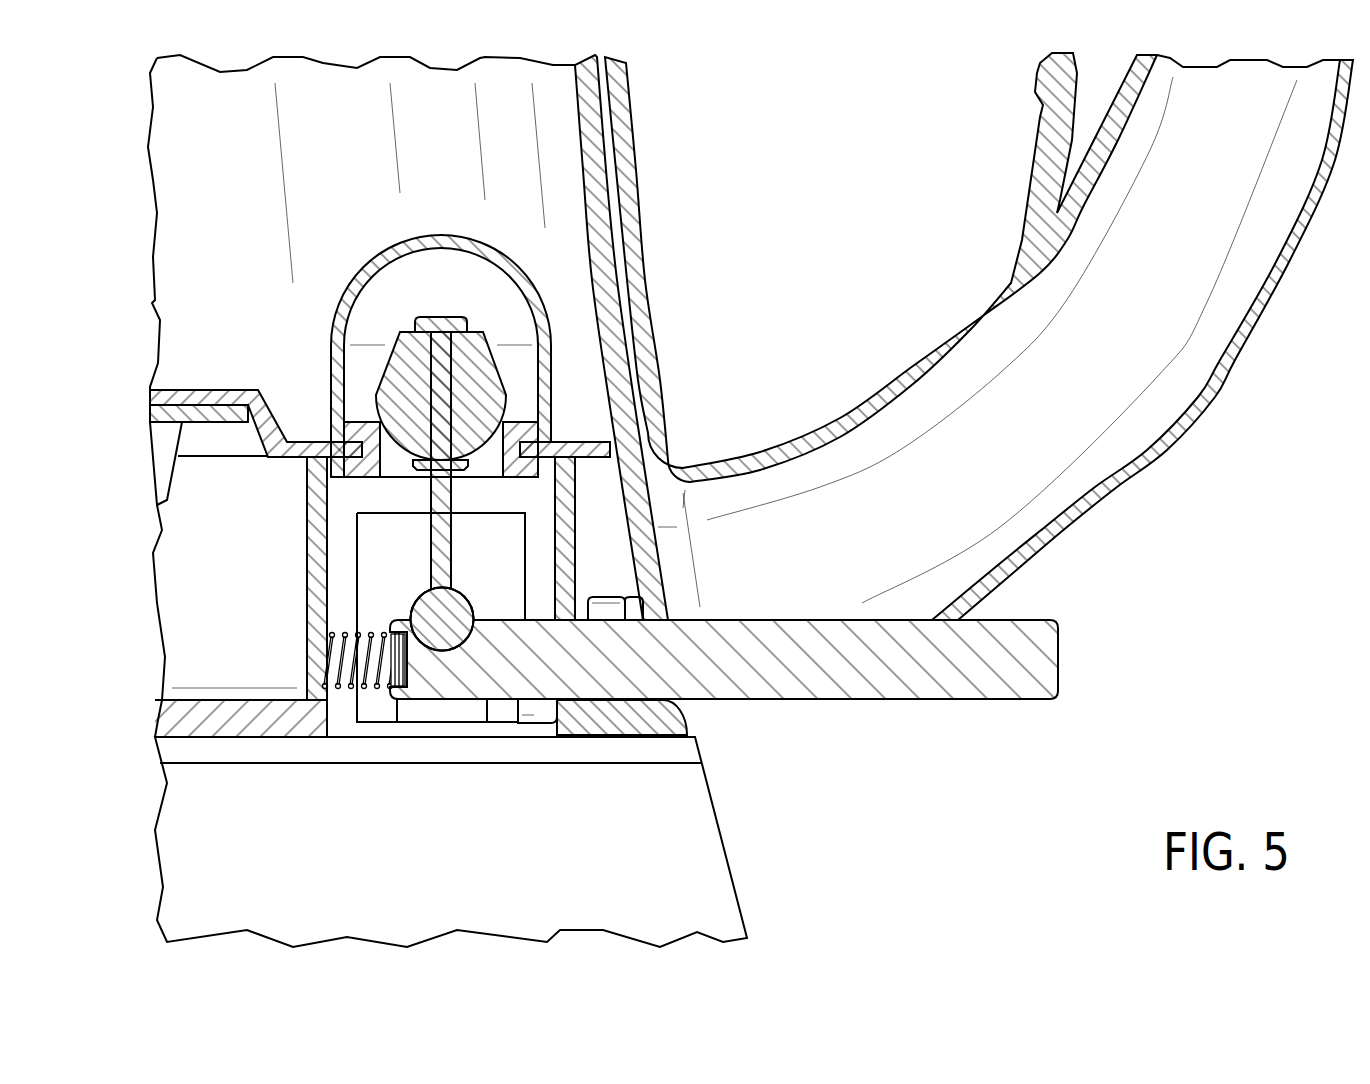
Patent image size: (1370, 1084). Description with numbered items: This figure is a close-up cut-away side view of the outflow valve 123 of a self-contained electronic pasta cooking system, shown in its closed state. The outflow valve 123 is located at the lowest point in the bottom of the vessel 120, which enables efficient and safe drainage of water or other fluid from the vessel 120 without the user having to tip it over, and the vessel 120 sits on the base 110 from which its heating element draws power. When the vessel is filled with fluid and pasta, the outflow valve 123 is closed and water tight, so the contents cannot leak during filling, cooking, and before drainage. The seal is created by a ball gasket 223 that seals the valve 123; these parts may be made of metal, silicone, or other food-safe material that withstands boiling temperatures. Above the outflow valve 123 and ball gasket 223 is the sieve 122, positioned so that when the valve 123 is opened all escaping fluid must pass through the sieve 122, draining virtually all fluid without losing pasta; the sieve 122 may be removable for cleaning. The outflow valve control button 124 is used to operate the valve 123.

The base 110 is at (450, 844).
The vessel 120 is at (352, 151).
The sieve 122 is at (498, 248).
The outflow valve 123 is at (330, 634).
The outflow valve control button 124 is at (1030, 662).
The ball gasket 223 is at (506, 388).